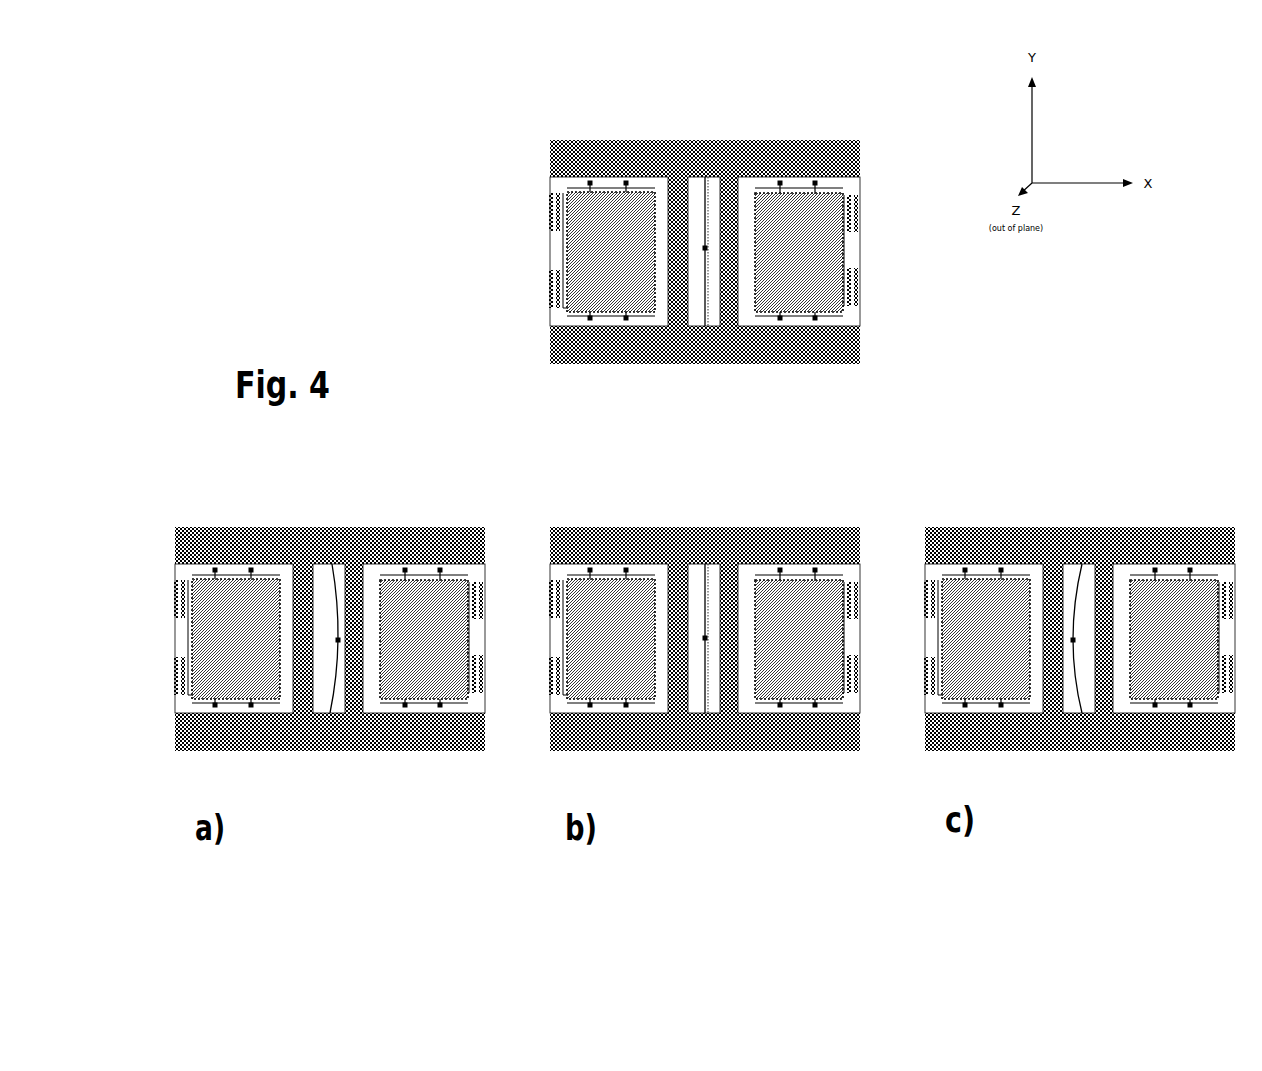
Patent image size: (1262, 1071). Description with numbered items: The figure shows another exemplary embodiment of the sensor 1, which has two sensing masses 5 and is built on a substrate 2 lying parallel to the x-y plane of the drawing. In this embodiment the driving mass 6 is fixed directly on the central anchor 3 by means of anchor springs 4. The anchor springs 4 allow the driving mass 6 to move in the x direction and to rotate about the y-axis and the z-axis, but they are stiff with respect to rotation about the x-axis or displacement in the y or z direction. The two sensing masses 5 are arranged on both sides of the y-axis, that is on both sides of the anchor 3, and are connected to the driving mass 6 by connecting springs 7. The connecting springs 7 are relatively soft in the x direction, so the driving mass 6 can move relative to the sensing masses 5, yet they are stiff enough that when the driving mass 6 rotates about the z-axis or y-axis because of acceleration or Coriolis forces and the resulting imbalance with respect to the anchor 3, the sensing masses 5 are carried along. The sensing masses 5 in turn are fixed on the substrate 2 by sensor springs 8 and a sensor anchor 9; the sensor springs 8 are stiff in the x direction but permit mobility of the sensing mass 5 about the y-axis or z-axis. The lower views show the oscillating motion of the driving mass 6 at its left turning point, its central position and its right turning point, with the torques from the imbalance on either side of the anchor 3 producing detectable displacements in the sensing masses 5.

The sensor 1 is at (522, 242).
The substrate 2 is at (673, 113).
The anchor 3 is at (705, 250).
The anchor springs 4 is at (706, 215).
The sensing masses 5 is at (575, 255).
The driving mass 6 is at (577, 137).
The connecting springs 7 is at (550, 212).
The sensor springs 8 is at (592, 183).
The sensor anchor 9 is at (575, 188).